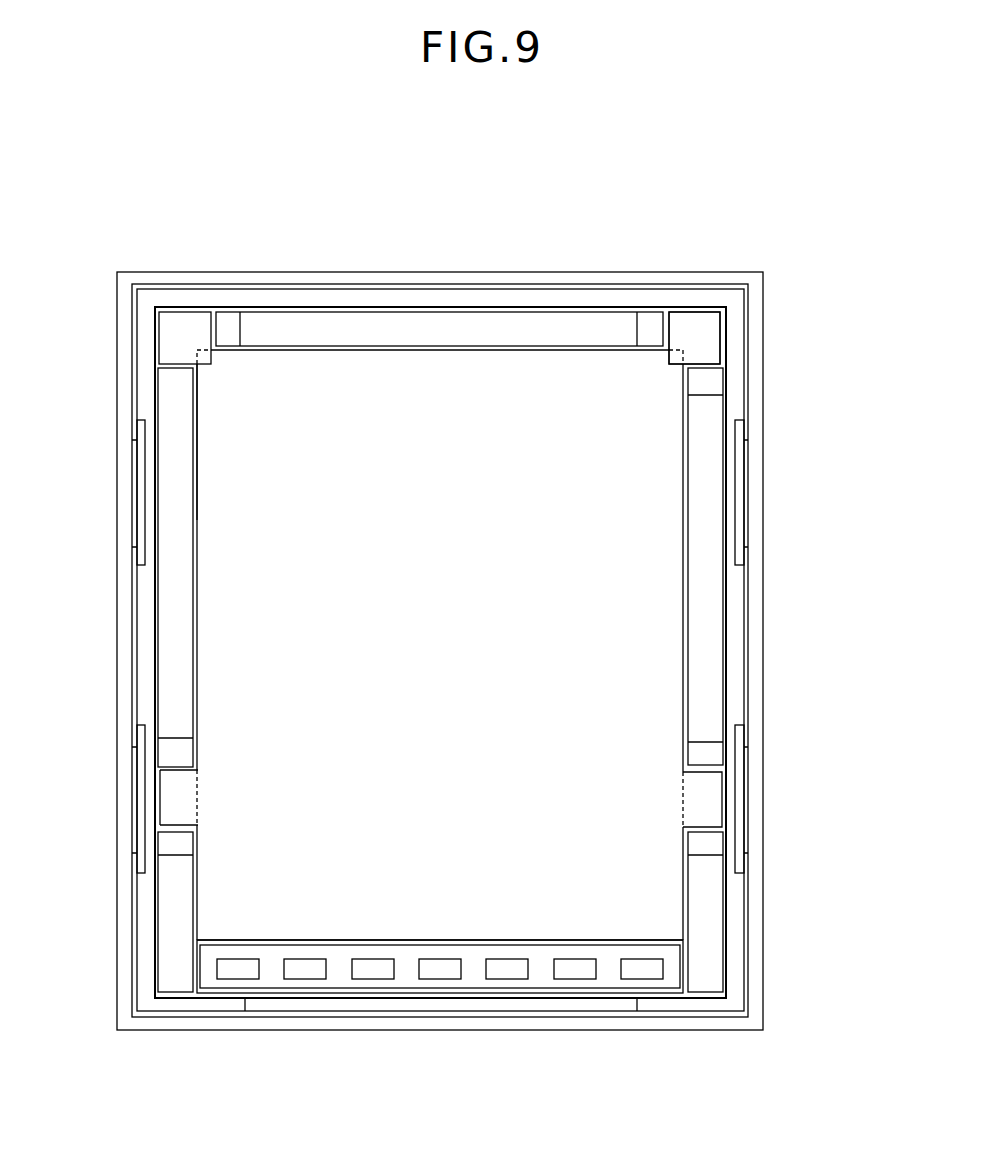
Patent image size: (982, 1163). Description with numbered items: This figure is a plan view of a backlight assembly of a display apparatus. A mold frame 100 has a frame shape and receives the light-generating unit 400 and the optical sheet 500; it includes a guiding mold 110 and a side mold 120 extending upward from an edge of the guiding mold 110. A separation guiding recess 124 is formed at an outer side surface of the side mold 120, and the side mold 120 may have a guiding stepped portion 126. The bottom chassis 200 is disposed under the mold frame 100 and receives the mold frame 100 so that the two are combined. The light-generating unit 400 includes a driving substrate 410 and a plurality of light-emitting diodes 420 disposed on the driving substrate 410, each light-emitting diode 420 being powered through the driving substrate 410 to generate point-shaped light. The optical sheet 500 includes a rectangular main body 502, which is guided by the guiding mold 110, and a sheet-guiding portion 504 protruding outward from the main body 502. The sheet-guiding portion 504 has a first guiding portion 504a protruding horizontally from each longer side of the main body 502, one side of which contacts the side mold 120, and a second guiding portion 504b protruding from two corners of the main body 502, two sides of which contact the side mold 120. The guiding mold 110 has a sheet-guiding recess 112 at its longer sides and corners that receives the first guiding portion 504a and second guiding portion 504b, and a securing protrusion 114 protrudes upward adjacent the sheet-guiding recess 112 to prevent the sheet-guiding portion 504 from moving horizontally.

The mold frame 100 is at (298, 187).
The guiding mold 110 is at (397, 328).
The sheet-guiding recess 112 is at (712, 325).
The securing protrusion 114 is at (653, 320).
The side mold 120 is at (315, 299).
The separation guiding recess 124 is at (141, 795).
The guiding stepped portion 126 is at (533, 1002).
The bottom chassis 200 is at (527, 271).
The light-generating unit 400 is at (457, 1102).
The driving substrate 410 is at (338, 983).
The light-emitting diode 420 is at (437, 983).
The optical sheet 500 is at (236, 649).
The main body 502 is at (228, 394).
The sheet-guiding portion 504 is at (843, 806).
The first guiding portion 504a is at (705, 798).
The second guiding portion 504b is at (705, 347).